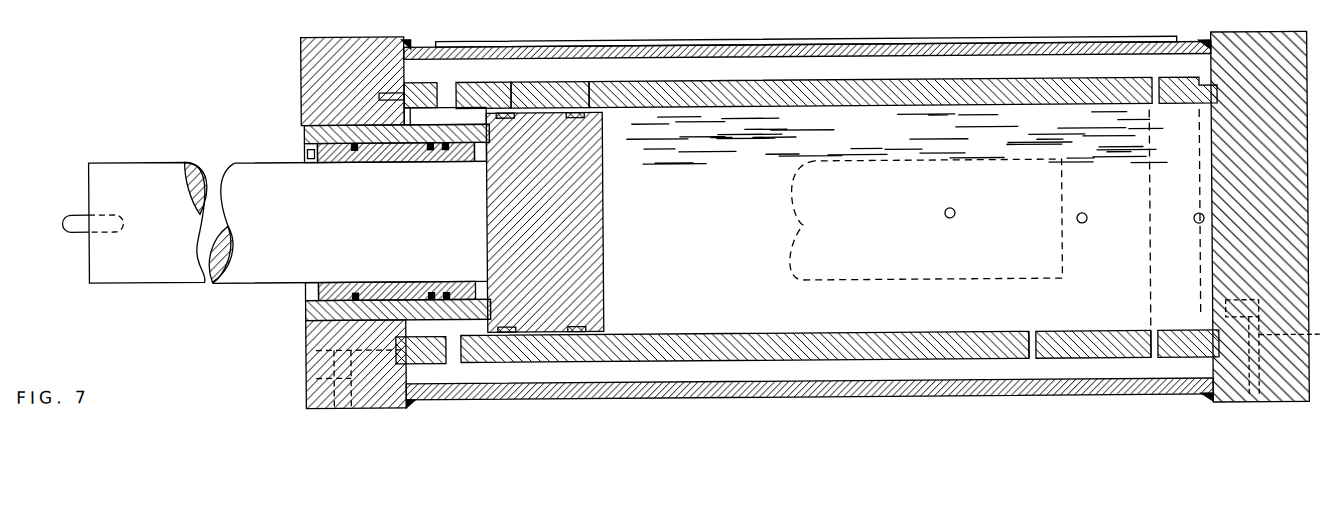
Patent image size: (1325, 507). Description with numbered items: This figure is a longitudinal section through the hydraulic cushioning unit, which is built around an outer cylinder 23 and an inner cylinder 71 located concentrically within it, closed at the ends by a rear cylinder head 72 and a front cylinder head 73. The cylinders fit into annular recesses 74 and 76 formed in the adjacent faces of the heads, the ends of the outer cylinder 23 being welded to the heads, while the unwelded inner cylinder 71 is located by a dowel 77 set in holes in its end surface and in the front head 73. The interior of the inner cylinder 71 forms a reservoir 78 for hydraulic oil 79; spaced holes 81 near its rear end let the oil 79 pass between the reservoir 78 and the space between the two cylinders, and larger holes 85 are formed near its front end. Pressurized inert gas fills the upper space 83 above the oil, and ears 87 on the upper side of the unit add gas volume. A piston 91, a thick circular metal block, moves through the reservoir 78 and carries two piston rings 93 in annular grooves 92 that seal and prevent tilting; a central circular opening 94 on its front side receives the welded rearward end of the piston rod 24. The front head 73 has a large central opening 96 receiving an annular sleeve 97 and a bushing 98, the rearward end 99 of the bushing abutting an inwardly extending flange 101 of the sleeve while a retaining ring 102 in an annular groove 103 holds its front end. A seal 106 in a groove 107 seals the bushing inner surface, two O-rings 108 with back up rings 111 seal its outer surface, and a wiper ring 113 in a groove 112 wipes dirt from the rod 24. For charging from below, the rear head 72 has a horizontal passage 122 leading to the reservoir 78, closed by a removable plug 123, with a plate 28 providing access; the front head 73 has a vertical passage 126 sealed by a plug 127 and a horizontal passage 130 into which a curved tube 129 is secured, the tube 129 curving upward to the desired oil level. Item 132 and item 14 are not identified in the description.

The plate 28 is at (199, 96).
The front cylinder head 73 is at (302, 48).
The inner cylinder 71 is at (688, 337).
The ears 87 is at (838, 39).
The outer cylinder 23 is at (765, 397).
The rear cylinder head 72 is at (1265, 40).
The annular recess 76 is at (405, 40).
The annular recess 74 is at (385, 92).
The dowel 77 is at (420, 83).
The larger holes 85 is at (442, 92).
The annular grooves 92 is at (515, 86).
The piston rings 93 is at (582, 105).
The upper space 83 is at (812, 79).
The hydraulic oil 79 is at (932, 122).
The reservoir 78 is at (704, 215).
The circular opening 94 is at (512, 216).
The piston 91 is at (605, 193).
The piston rod 24 is at (155, 251).
The holes 81 is at (955, 213).
The passage 132 is at (1200, 238).
The horizontal passage 122 is at (1232, 306).
The removable plug 123 is at (1254, 404).
The annular groove 103 is at (305, 149).
The bushing 98 is at (355, 148).
The opening 96 is at (306, 128).
The annular sleeve 97 is at (306, 137).
The retaining ring 102 is at (306, 164).
The groove 107 is at (410, 150).
The seal 106 is at (432, 148).
The rearward end of the bushing 99 is at (474, 148).
The inwardly extending flange 101 is at (484, 147).
The wiper ring 113 is at (320, 286).
The groove 112 is at (328, 296).
The back up rings 111 is at (374, 296).
The O-rings 108 is at (380, 300).
The seal 14 is at (447, 300).
The vertical passage 126 is at (305, 385).
The removable plug 127 is at (336, 410).
The horizontal passage 130 is at (392, 406).
The curved tube 129 is at (468, 398).